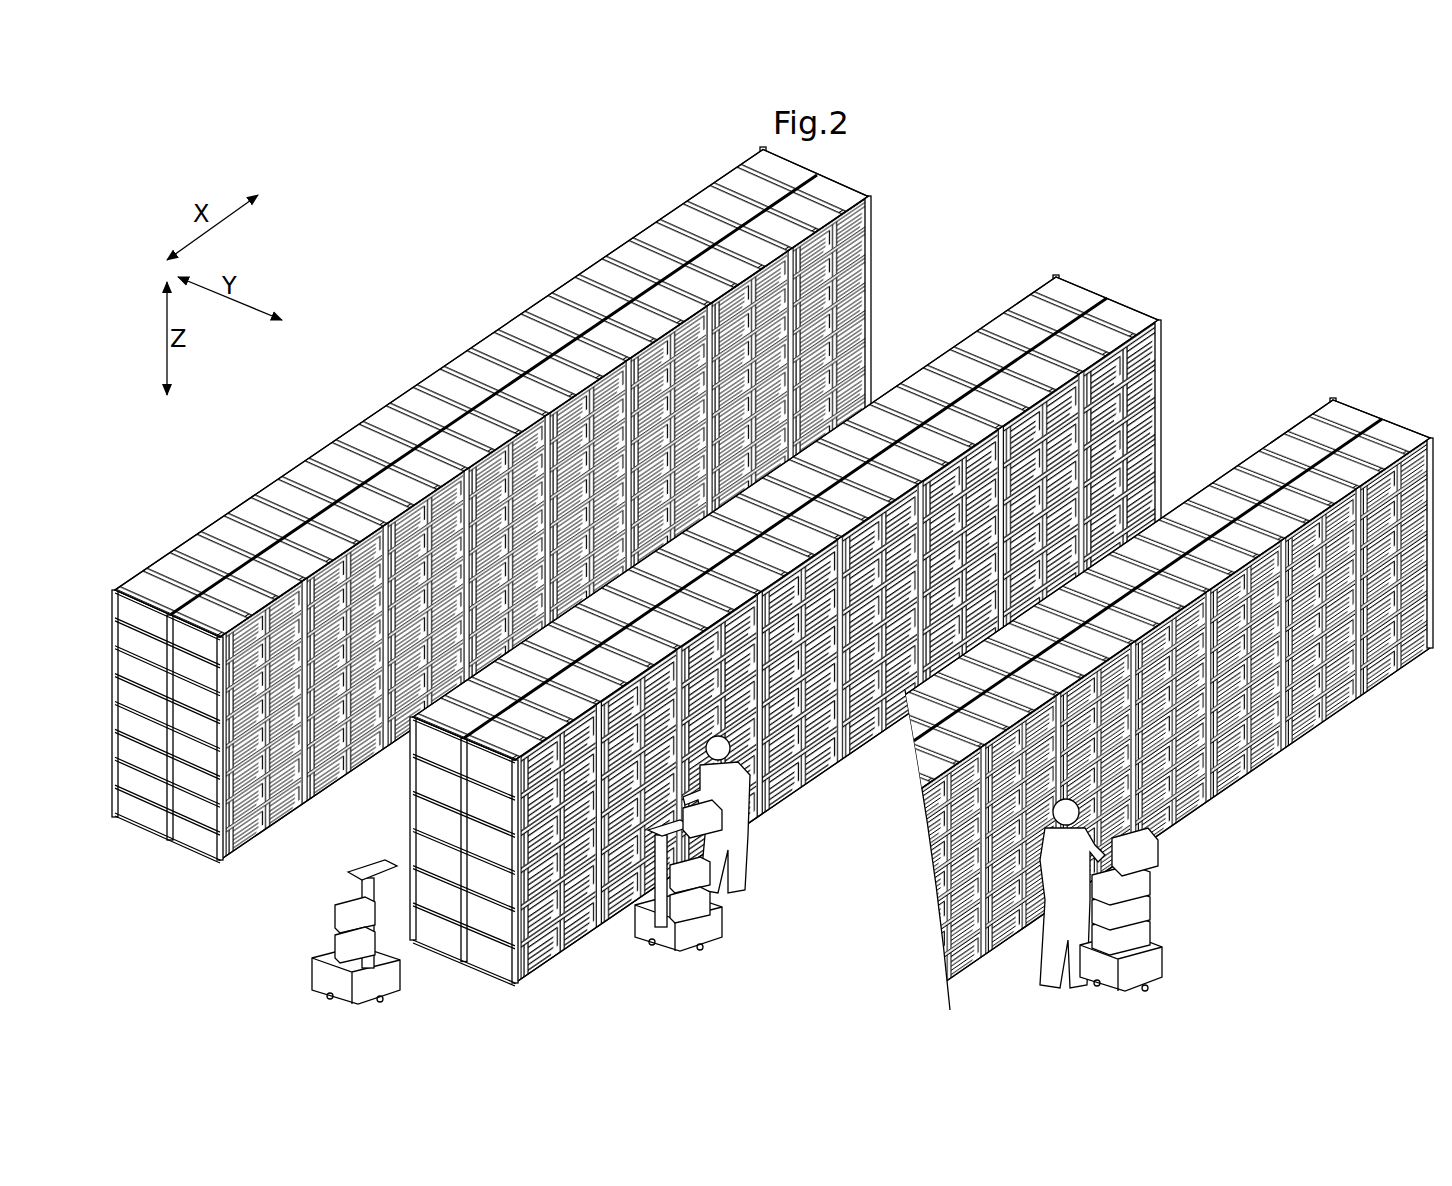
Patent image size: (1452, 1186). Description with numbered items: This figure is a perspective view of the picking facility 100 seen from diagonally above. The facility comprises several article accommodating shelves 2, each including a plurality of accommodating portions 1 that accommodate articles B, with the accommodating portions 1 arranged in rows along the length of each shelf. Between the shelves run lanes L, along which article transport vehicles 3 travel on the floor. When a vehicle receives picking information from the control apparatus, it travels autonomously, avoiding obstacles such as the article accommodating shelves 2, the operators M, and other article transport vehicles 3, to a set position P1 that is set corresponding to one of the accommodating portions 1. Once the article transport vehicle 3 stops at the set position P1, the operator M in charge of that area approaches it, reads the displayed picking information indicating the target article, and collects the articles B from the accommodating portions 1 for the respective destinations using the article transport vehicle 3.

The picking facility 100 is at (1247, 245).
The accommodating portion 1 is at (560, 320).
The article accommodating shelf 2 is at (883, 233).
The article transport vehicle 3 is at (786, 891).
The article B is at (745, 818).
The operator M is at (760, 840).
The lane L is at (268, 885).
The set position P1 is at (682, 970).